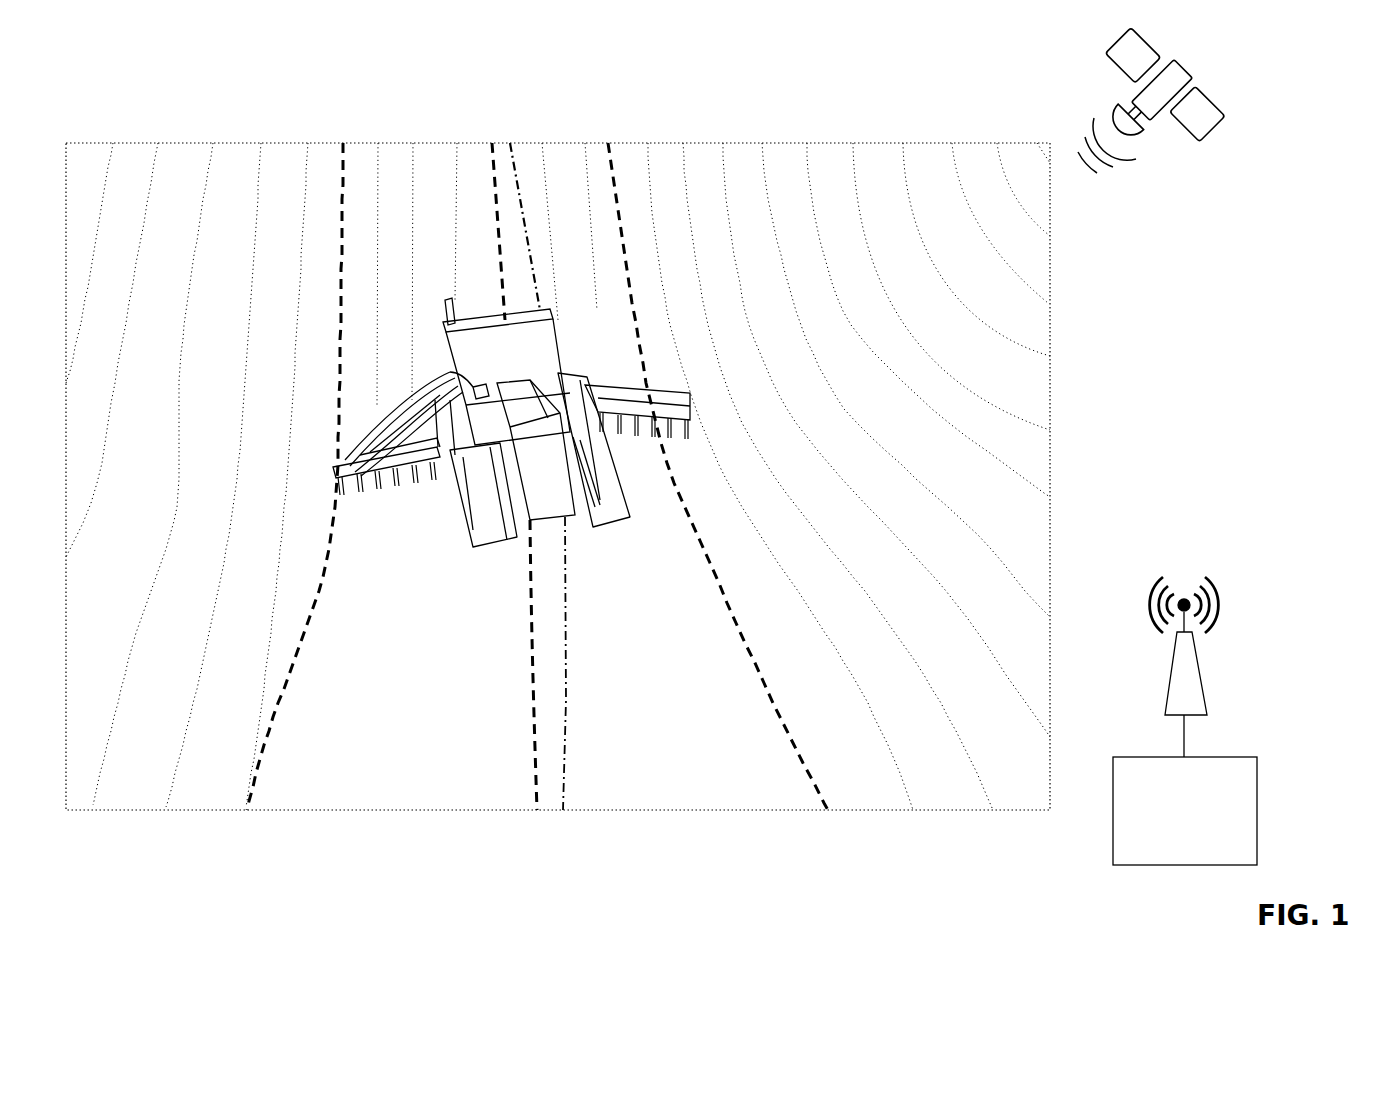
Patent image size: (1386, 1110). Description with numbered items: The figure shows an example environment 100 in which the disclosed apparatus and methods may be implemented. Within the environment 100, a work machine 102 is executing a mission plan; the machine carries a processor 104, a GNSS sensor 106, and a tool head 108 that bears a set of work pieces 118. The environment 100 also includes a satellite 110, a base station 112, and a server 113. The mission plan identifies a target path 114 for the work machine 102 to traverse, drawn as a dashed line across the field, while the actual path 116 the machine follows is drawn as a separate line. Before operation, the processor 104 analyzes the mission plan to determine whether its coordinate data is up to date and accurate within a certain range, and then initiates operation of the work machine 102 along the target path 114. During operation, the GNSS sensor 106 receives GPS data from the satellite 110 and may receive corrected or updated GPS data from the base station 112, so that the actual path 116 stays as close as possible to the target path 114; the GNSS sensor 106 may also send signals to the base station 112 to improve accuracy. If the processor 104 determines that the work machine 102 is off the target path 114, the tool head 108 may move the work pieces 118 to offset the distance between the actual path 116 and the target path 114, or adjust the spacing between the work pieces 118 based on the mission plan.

The environment 100 is at (298, 98).
The work machine 102 is at (512, 416).
The processor 104 is at (465, 390).
The GNSS sensor 106 is at (447, 300).
The tool head 108 is at (337, 467).
The satellite 110 is at (1113, 33).
The base station 112 is at (1165, 715).
The server 113 is at (1113, 865).
The target path 114 is at (535, 745).
The actual path 116 is at (567, 714).
The work pieces 118 is at (392, 490).